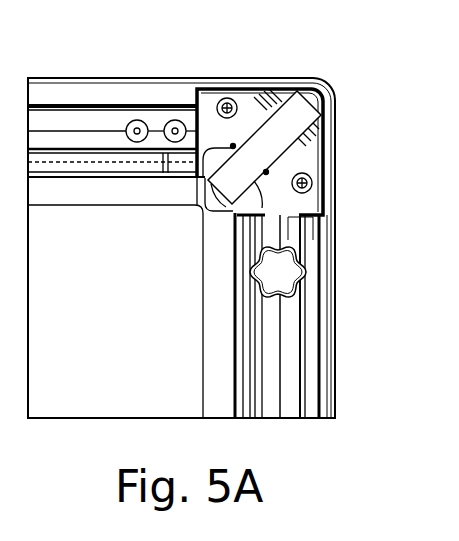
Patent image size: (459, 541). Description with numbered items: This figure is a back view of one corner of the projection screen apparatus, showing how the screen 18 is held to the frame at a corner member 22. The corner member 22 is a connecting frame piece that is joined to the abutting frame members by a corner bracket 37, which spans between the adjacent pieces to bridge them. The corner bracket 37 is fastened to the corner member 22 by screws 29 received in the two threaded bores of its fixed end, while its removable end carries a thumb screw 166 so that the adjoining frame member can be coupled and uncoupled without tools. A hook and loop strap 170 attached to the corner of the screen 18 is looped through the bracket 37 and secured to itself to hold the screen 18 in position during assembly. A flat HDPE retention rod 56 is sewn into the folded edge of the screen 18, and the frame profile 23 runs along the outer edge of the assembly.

The screen 18 is at (113, 330).
The corner member 22 is at (337, 128).
The frame profile 23 is at (62, 78).
The screws 29 is at (137, 120).
The corner bracket 37 is at (313, 166).
The retention rod 56 is at (166, 160).
The thumb screw 166 is at (313, 273).
The strap 170 is at (305, 90).